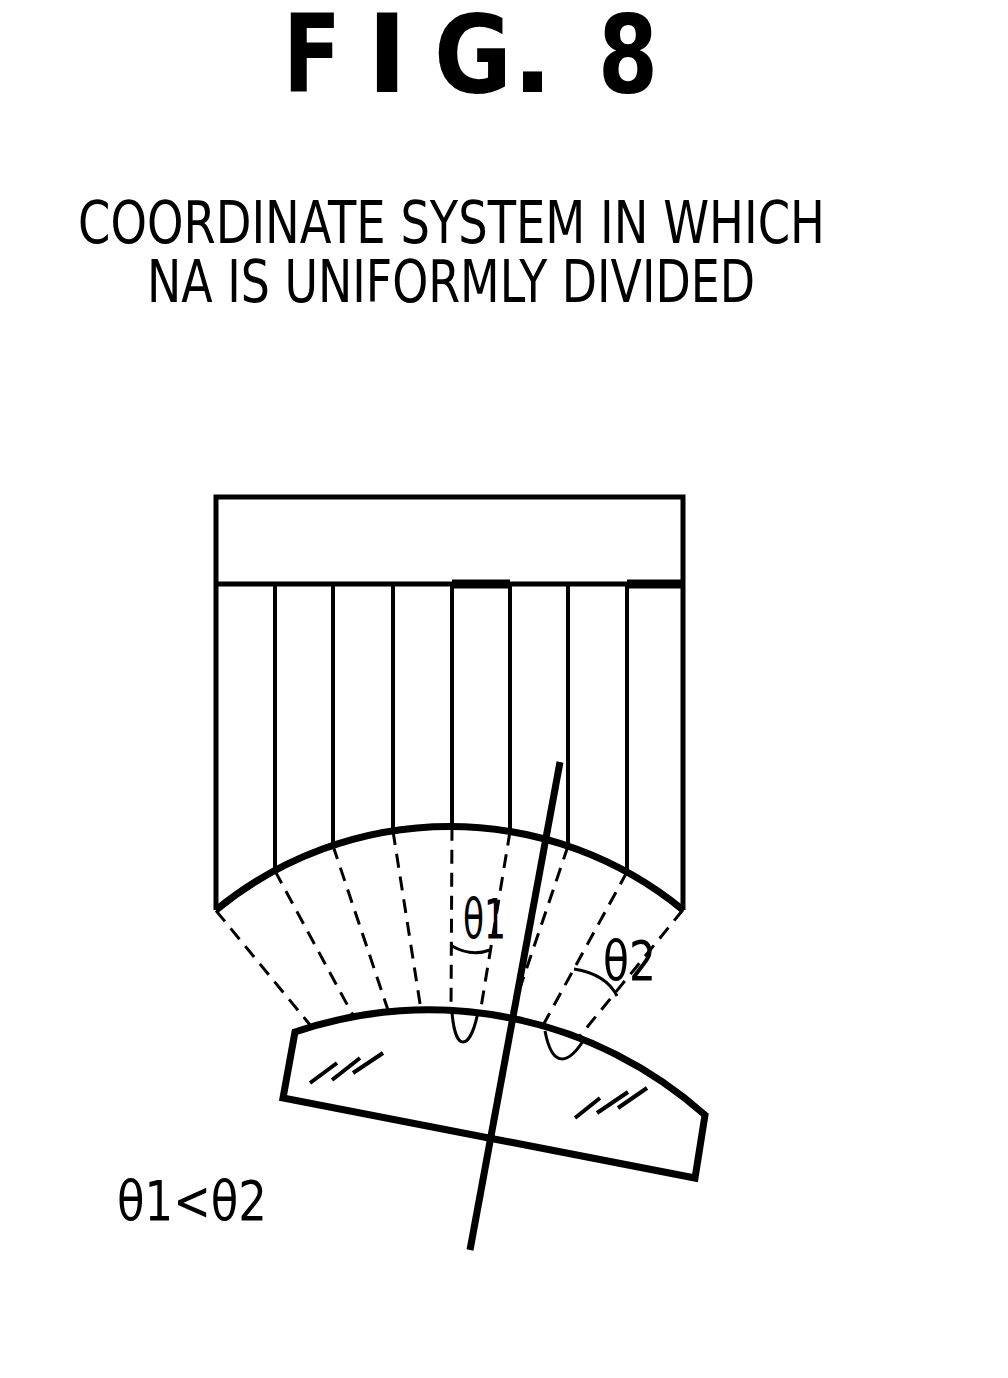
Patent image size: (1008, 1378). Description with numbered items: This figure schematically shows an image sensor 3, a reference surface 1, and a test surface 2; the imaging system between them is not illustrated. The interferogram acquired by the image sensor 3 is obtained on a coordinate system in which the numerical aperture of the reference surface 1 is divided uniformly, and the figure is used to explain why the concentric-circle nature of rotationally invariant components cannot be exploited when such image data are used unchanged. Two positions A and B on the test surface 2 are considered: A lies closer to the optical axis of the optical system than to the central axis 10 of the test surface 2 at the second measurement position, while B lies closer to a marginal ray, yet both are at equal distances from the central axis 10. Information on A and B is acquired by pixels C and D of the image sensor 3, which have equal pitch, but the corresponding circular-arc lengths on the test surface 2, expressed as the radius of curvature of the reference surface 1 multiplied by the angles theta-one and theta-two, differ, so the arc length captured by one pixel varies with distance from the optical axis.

The reference surface 1 is at (683, 913).
The test surface 2 is at (702, 1158).
The image sensor 3 is at (260, 497).
The central axis of the test surface 10 is at (475, 1233).